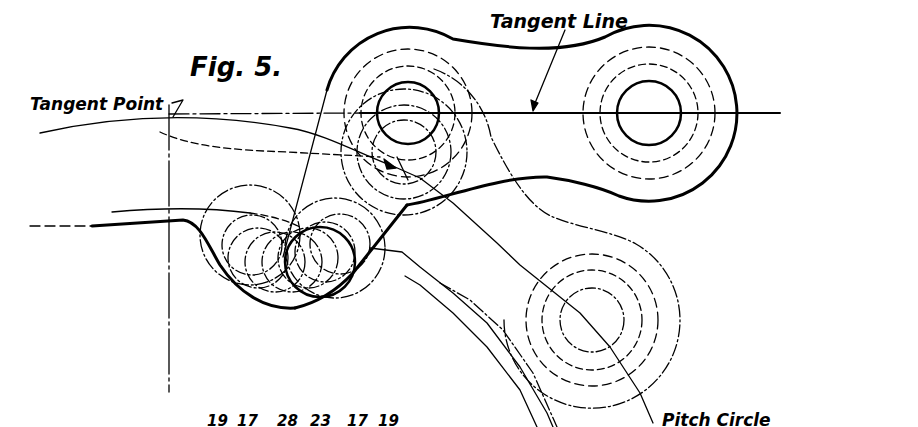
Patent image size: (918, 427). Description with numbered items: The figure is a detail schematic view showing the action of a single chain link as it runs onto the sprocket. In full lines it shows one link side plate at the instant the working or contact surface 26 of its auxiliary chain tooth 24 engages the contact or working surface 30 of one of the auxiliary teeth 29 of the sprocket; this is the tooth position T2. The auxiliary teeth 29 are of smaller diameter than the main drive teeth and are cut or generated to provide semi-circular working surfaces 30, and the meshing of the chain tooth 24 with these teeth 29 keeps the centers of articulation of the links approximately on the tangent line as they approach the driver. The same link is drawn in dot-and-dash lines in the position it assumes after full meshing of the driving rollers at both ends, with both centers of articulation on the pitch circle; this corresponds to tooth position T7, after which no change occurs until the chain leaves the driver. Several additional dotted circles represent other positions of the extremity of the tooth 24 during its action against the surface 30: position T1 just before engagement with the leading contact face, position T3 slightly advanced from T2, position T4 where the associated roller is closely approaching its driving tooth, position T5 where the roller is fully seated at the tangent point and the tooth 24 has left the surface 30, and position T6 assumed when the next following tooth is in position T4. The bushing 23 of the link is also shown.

The bushing 23 is at (429, 59).
The auxiliary chain tooth 24 is at (395, 233).
The working or contact surface 26 is at (317, 293).
The auxiliary teeth 29 is at (365, 278).
The contact or working surface 30 is at (245, 296).
The tooth position T1 is at (385, 251).
The tooth position T2 is at (323, 288).
The tooth position T3 is at (303, 297).
The tooth position T4 is at (283, 307).
The tooth position T5 is at (272, 297).
The tooth position T6 is at (232, 275).
The tooth position T7 is at (233, 240).